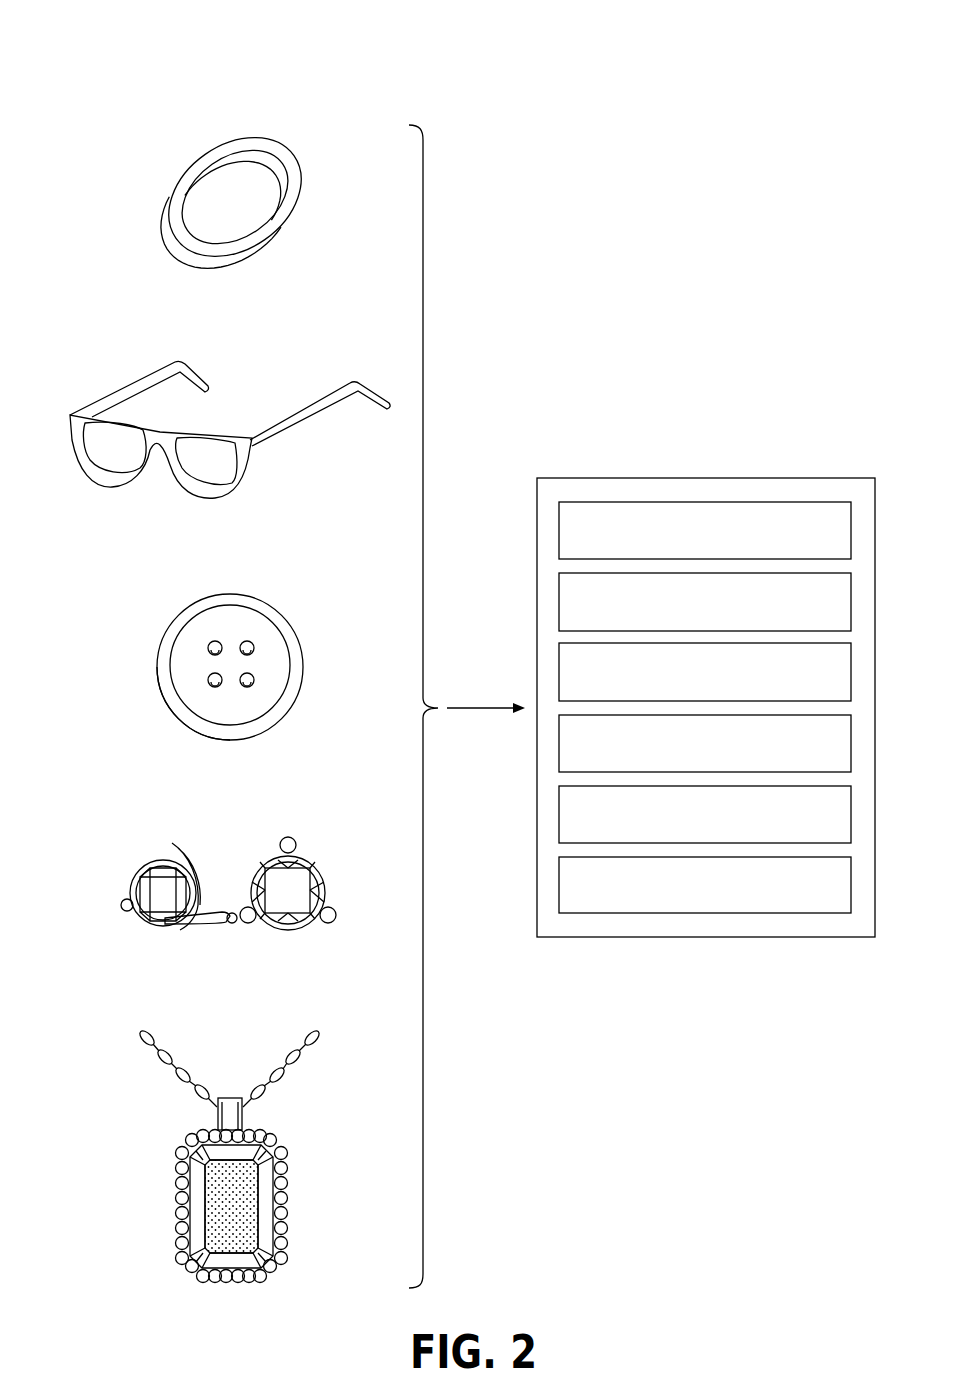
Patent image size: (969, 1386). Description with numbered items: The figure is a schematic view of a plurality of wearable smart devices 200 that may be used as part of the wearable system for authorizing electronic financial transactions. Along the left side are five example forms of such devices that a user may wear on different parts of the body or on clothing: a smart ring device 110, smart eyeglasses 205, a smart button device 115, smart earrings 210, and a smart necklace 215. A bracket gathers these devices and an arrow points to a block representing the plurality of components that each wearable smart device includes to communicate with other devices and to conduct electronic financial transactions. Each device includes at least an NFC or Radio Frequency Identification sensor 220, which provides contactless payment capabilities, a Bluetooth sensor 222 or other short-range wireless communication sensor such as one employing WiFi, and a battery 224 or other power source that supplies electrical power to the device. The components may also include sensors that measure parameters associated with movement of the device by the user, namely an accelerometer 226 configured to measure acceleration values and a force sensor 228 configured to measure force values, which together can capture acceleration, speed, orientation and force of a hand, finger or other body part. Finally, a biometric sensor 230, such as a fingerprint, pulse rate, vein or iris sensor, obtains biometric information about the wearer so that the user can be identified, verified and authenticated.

The plurality of wearable smart devices 200 is at (273, 77).
The smart ring device 110 is at (202, 147).
The smart eyeglasses 205 is at (223, 430).
The smart button device 115 is at (197, 600).
The smart earrings 210 is at (140, 863).
The smart necklace 215 is at (207, 1202).
The NFC or Radio Frequency Identification (RFID) sensor 220 is at (558, 533).
The Bluetooth sensor 222 is at (558, 602).
The battery 224 is at (558, 675).
The accelerometer 226 is at (558, 740).
The force sensor 228 is at (558, 815).
The biometric sensor 230 is at (558, 882).